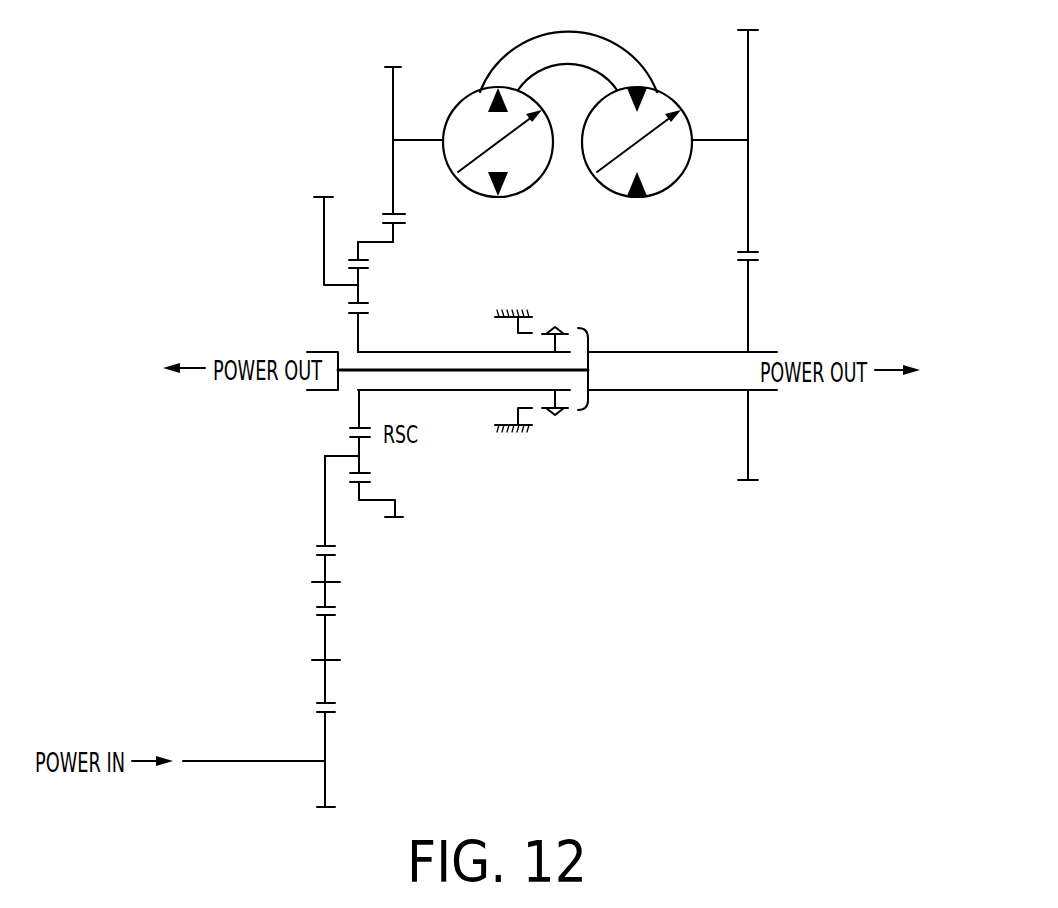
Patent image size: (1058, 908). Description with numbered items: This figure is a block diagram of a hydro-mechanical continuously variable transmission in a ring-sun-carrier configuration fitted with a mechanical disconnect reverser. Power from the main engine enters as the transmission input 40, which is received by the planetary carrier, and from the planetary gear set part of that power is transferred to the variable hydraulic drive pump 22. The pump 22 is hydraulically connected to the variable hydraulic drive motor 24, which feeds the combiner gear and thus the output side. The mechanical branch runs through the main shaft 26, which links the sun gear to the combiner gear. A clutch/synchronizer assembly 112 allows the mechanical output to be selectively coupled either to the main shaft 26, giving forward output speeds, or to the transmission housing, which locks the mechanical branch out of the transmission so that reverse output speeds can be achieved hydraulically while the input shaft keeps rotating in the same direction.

The transmission input 40 is at (321, 182).
The hydraulic drive pump 22 is at (525, 167).
The hydraulic drive motor 24 is at (664, 167).
The main shaft 26 is at (398, 351).
The clutch/synchronizer assembly 112 is at (520, 430).